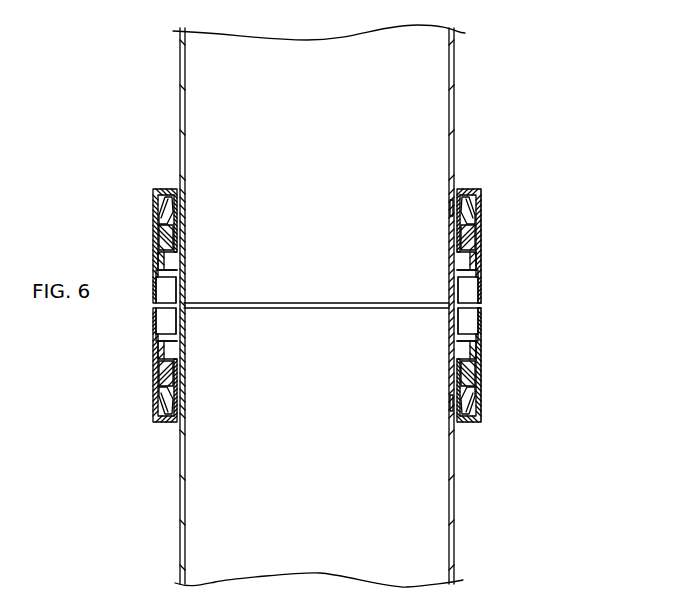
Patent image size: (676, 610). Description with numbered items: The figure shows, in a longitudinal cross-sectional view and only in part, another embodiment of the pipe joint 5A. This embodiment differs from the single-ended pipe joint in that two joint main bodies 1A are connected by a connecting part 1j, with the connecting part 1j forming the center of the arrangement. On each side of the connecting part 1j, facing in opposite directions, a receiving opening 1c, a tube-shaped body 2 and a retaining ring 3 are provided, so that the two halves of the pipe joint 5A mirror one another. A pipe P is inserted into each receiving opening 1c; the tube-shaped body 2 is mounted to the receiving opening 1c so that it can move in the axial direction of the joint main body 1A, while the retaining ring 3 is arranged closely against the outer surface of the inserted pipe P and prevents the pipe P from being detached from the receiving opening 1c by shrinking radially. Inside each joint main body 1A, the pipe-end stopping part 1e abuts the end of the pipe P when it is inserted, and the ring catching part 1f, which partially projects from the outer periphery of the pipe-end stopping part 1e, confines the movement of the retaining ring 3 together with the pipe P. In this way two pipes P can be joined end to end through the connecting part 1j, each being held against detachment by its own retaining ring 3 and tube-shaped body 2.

The pipe P is at (453, 89).
The joint main body 1A is at (485, 255).
The receiving opening 1c is at (450, 212).
The pipe-end stopping part 1e is at (248, 302).
The ring catching part 1f is at (457, 263).
The connecting part 1j is at (457, 282).
The tube-shaped body 2 is at (479, 215).
The retaining ring 3 is at (455, 230).
The pipe joint 5A is at (503, 288).